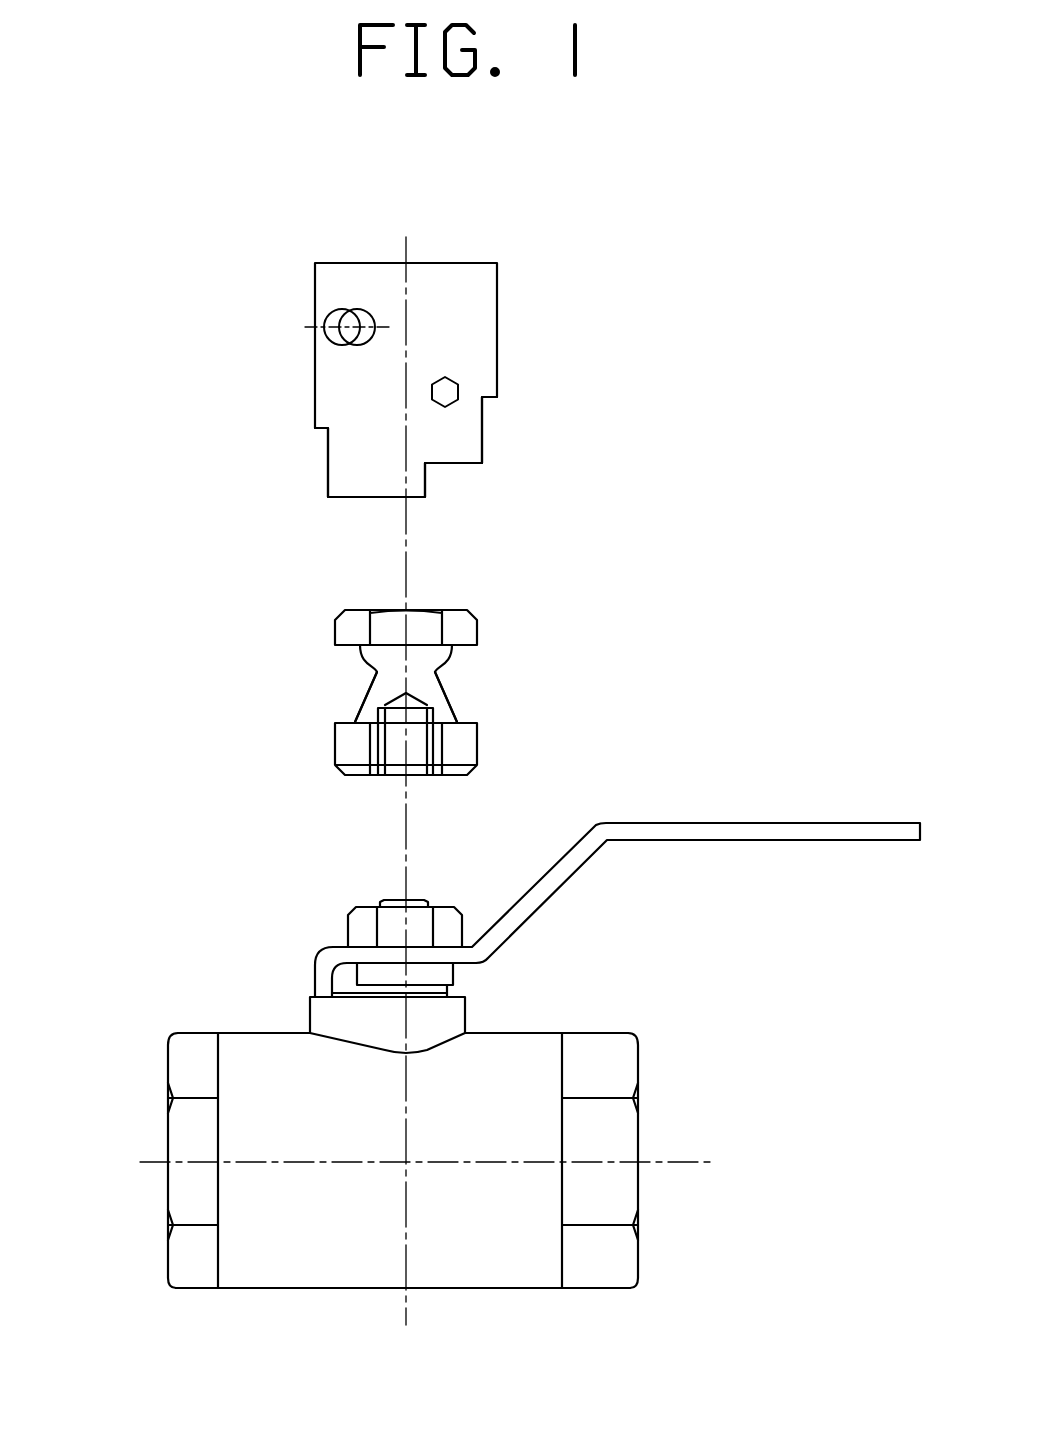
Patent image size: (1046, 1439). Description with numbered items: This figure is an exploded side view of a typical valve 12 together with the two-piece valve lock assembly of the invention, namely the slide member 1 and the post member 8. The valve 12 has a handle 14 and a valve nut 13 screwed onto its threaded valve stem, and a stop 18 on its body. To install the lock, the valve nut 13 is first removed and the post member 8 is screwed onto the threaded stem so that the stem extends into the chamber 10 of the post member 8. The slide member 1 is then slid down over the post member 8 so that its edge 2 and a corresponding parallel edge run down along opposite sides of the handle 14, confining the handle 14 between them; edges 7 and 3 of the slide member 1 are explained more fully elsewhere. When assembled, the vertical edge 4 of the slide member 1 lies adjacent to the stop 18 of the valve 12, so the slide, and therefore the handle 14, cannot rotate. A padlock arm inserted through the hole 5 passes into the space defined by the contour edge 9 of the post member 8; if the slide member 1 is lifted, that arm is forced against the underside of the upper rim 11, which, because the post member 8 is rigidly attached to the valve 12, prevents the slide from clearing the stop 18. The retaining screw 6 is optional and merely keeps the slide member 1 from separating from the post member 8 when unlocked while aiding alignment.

The slide member 1 is at (315, 382).
The edge 2 is at (482, 412).
The edge 3 is at (470, 465).
The edge 4 is at (328, 468).
The hole 5 is at (340, 320).
The retaining screw 6 is at (453, 373).
The edge 7 is at (428, 483).
The post member 8 is at (432, 670).
The contour edge 9 is at (353, 707).
The chamber 10 is at (395, 750).
The upper rim 11 is at (335, 625).
The valve 12 is at (168, 1058).
The valve nut 13 is at (348, 923).
The handle 14 is at (632, 843).
The stop 18 is at (308, 1020).